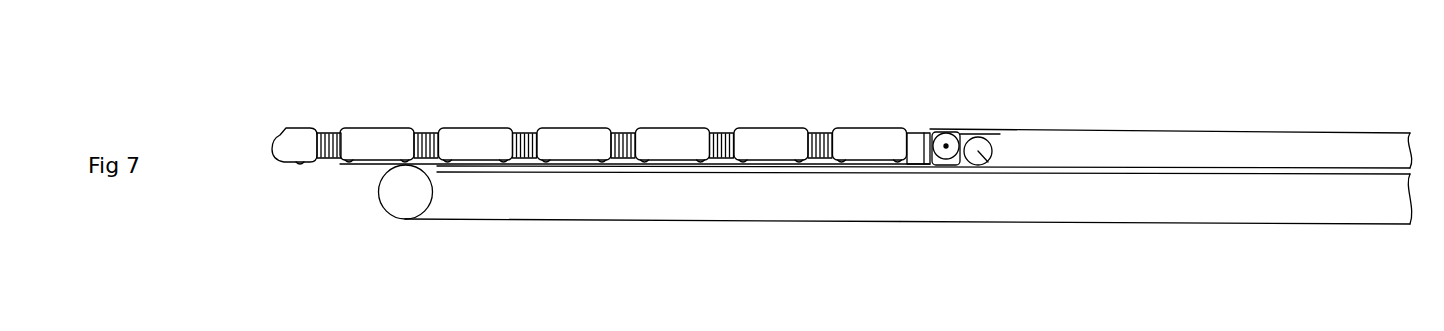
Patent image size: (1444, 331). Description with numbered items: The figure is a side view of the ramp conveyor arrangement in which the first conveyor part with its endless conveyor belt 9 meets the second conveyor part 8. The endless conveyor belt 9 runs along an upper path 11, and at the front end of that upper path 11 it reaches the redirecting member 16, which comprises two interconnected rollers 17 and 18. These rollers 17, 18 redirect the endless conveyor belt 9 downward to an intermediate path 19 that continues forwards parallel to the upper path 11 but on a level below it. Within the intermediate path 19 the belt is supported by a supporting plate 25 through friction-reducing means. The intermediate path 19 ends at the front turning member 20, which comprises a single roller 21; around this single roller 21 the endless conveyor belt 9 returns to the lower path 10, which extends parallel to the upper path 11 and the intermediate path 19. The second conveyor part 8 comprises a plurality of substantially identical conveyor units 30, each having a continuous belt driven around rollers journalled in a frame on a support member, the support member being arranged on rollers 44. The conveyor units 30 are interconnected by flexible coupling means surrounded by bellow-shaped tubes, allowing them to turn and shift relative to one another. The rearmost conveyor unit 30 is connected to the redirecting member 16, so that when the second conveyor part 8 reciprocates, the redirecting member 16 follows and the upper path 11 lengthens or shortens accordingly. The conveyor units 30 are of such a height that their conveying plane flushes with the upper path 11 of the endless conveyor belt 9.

The second conveyor part 8 is at (298, 128).
The conveyor units 30 is at (457, 150).
The redirecting member 16 is at (947, 128).
The roller 17 is at (964, 134).
The upper path 11 is at (1120, 129).
The front turning member 20 is at (377, 197).
The single roller 21 is at (397, 205).
The rollers 44 is at (552, 166).
The intermediate path 19 is at (726, 173).
The endless conveyor belt 9 is at (814, 222).
The lower path 10 is at (884, 222).
The roller 18 is at (988, 166).
The supporting plate 25 is at (1110, 168).